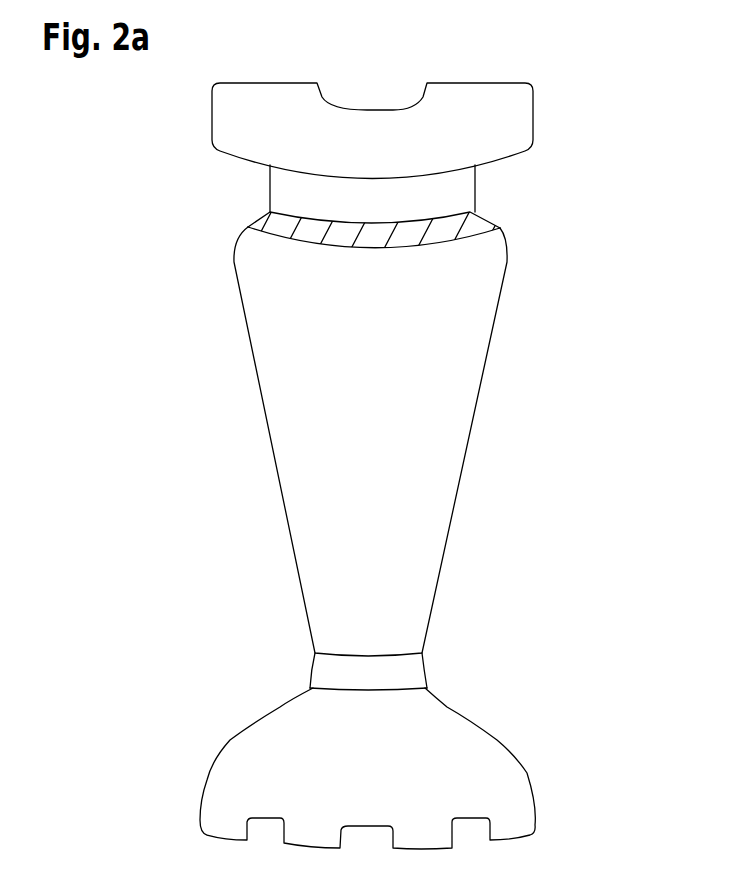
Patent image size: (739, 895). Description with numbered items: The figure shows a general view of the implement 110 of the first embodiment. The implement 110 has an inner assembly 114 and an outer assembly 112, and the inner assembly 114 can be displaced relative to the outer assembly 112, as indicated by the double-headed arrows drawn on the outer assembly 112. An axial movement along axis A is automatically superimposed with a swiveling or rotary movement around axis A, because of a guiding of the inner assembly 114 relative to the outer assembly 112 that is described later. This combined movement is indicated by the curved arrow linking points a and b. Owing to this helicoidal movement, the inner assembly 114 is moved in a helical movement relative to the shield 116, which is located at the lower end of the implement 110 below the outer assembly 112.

The implement 110 is at (567, 257).
The outer assembly 112 is at (280, 584).
The inner assembly 114 is at (533, 118).
The shield 116 is at (510, 748).